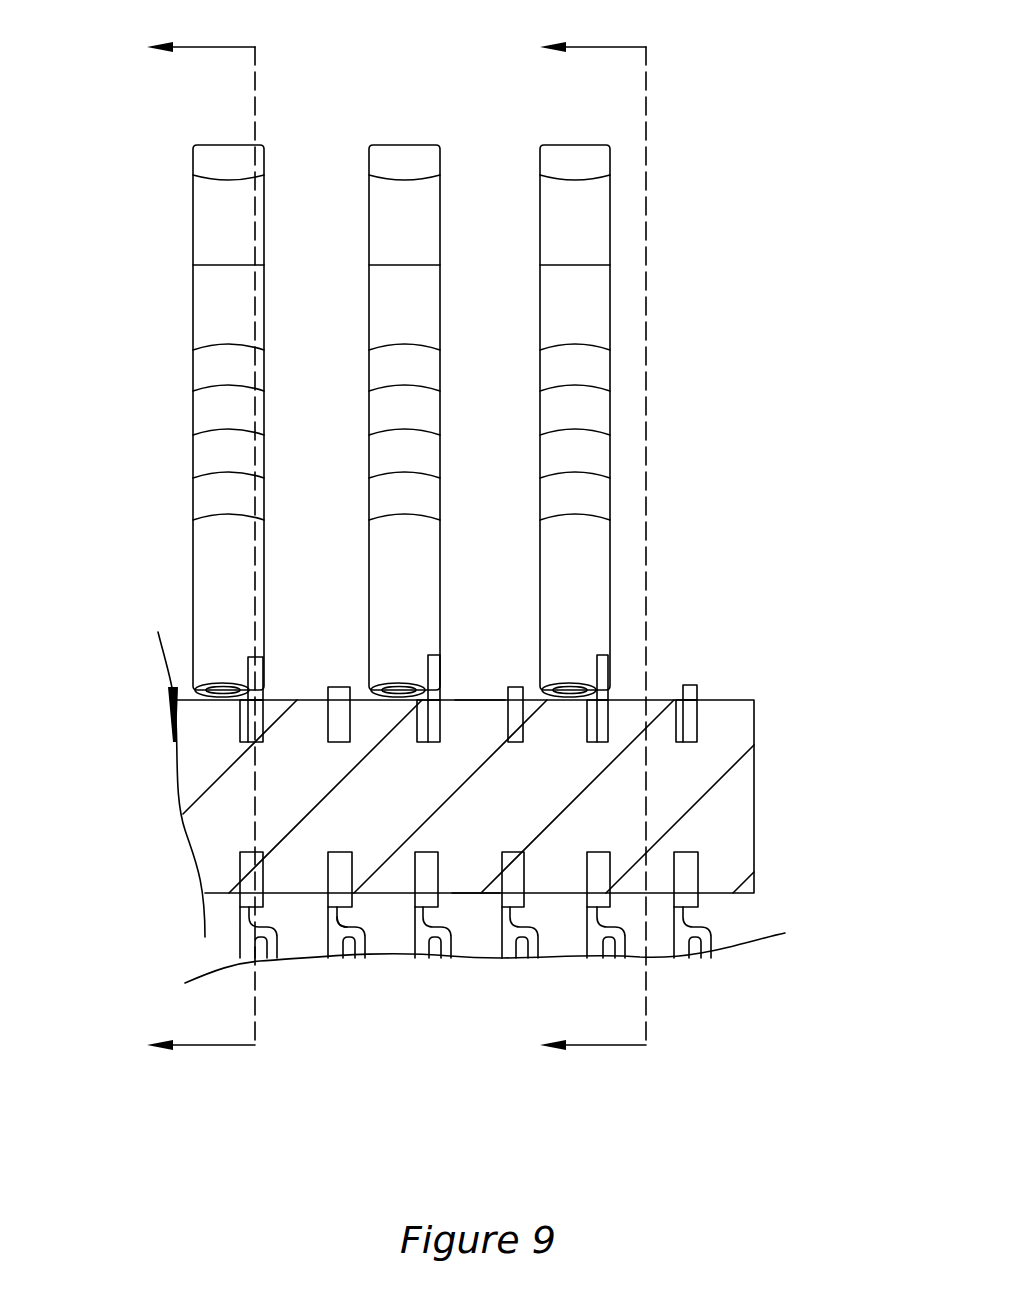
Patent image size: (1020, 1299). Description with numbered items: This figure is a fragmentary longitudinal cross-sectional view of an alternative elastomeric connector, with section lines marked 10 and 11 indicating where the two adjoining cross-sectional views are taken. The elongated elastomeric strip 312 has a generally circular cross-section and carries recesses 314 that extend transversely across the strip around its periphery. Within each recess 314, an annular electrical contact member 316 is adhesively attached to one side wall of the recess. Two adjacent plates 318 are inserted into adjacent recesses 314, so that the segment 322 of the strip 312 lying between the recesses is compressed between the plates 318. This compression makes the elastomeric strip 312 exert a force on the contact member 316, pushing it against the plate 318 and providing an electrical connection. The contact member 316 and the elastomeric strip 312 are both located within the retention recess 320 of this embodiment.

The section line 10- 10 is at (201, 550).
The section line 11- 11 is at (593, 550).
The elongated elastomeric strip 312 is at (716, 807).
The recess 314 is at (260, 880).
The electrical contact member 316 is at (432, 728).
The plate 318 is at (362, 950).
The retention recess 320 is at (470, 910).
The segment 322 is at (487, 684).